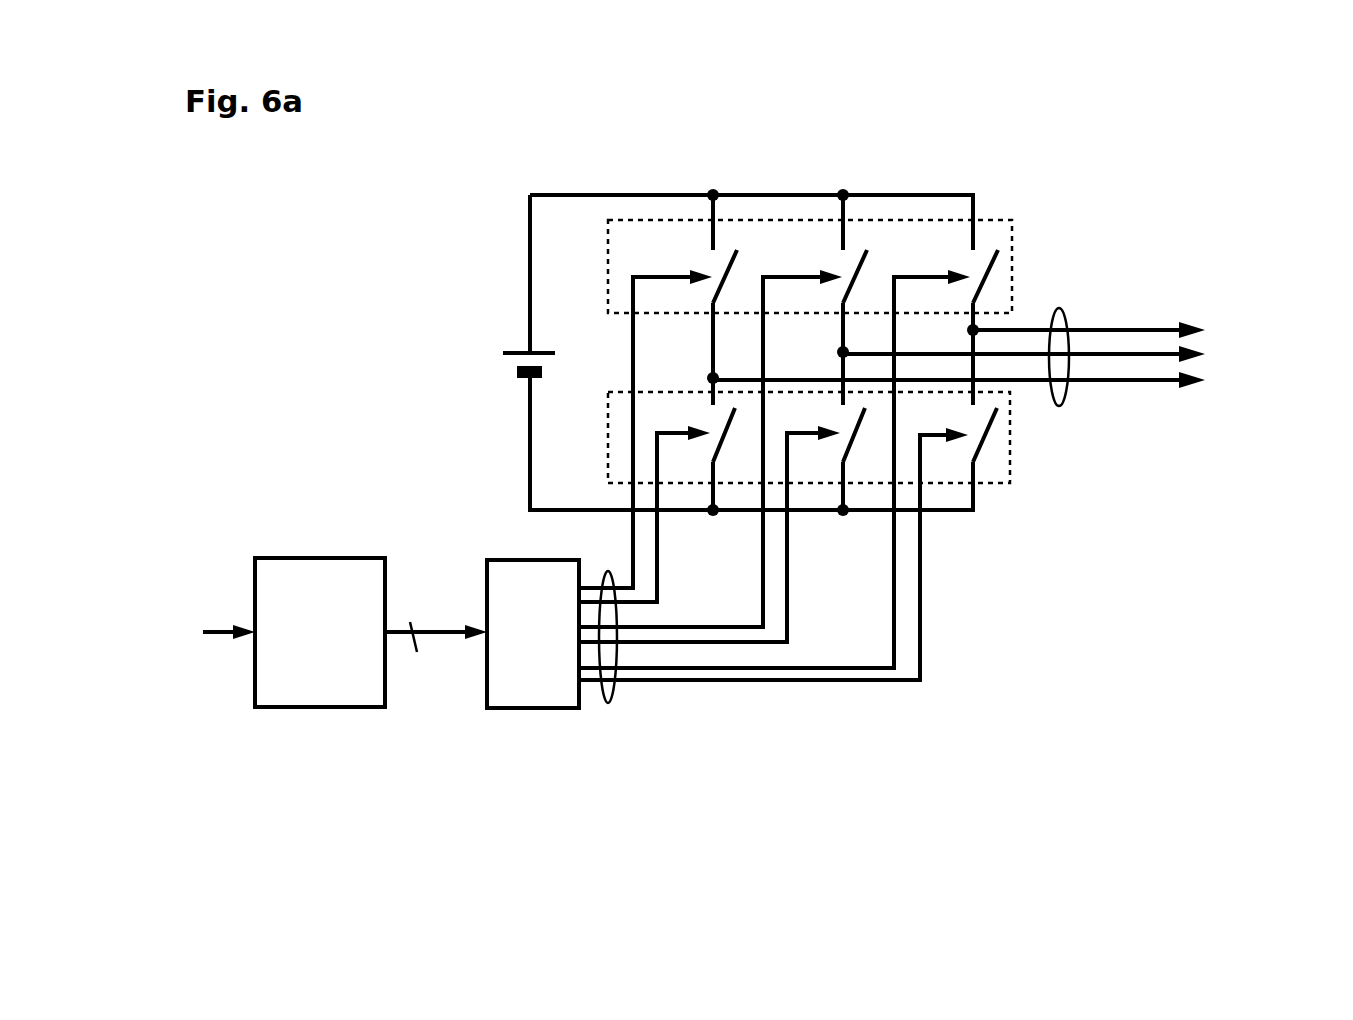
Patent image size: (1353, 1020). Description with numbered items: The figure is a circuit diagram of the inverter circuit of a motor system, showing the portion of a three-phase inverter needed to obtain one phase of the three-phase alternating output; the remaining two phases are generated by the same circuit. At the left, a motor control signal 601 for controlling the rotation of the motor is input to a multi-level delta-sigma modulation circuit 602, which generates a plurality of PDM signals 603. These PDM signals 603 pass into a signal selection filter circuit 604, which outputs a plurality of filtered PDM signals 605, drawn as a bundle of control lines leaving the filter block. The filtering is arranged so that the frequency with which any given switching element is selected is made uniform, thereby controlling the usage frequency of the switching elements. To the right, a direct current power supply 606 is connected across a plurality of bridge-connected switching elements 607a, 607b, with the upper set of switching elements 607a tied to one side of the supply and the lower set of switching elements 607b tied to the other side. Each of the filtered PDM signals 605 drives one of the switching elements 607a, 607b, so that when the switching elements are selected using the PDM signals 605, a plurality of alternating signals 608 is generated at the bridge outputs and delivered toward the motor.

The motor control signal 601 is at (228, 620).
The multi-level delta-sigma modulation circuit 602 is at (332, 552).
The PDM signals 603 is at (457, 627).
The signal selection filter circuit 604 is at (532, 558).
The filtered PDM signals 605 is at (613, 703).
The direct current power supply 606 is at (515, 345).
The bridge-connected switching elements 607a is at (1013, 220).
The bridge-connected switching elements 607b is at (1010, 435).
The alternating signals 608 is at (1063, 303).